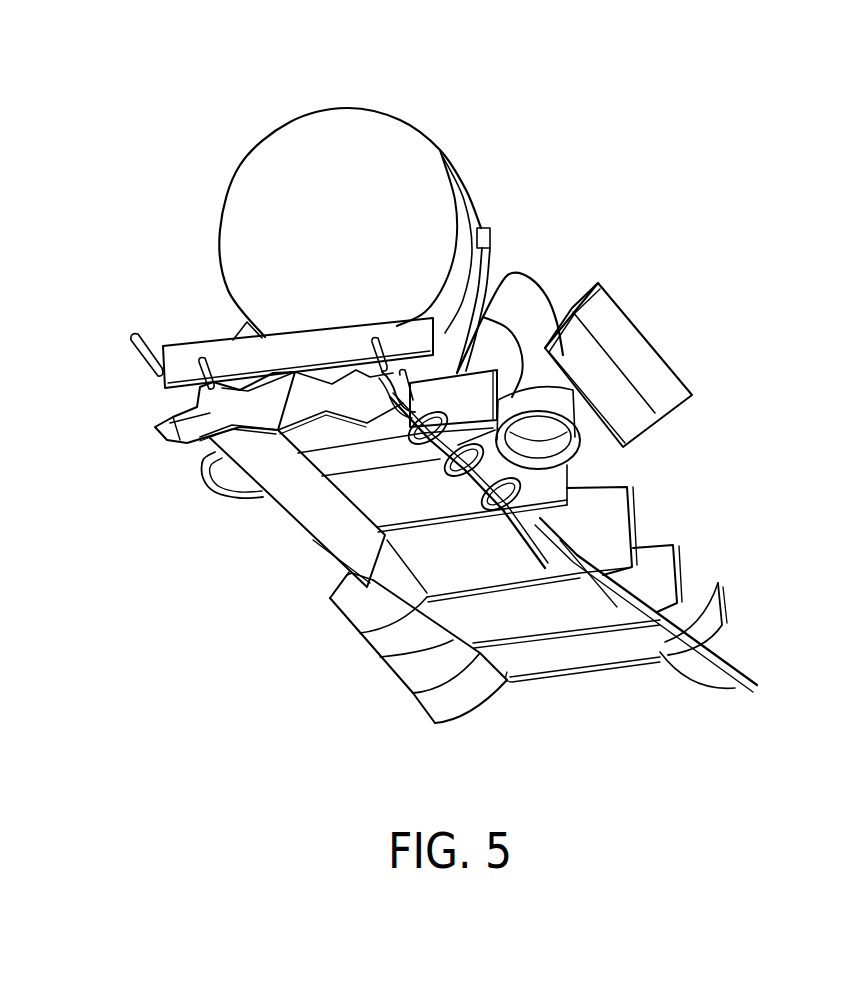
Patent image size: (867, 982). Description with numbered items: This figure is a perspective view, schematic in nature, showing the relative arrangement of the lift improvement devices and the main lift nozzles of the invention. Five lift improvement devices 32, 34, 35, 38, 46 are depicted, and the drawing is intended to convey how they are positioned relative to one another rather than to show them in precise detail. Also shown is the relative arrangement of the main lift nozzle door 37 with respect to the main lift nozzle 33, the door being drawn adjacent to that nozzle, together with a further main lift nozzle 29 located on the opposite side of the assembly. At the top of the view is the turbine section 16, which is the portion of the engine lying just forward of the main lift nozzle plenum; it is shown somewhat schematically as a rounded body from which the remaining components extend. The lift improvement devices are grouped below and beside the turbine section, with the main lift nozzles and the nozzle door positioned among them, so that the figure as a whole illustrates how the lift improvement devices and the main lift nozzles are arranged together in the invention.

The turbine section 16 is at (273, 132).
The main lift nozzle 29 is at (200, 455).
The lift improvement device 32 is at (177, 421).
The main lift nozzle 33 is at (583, 445).
The lift improvement device 34 is at (513, 540).
The lift improvement device 35 is at (728, 660).
The main lift nozzle door 37 is at (603, 318).
The lift improvement device 38 is at (385, 663).
The lift improvement device 46 is at (287, 503).